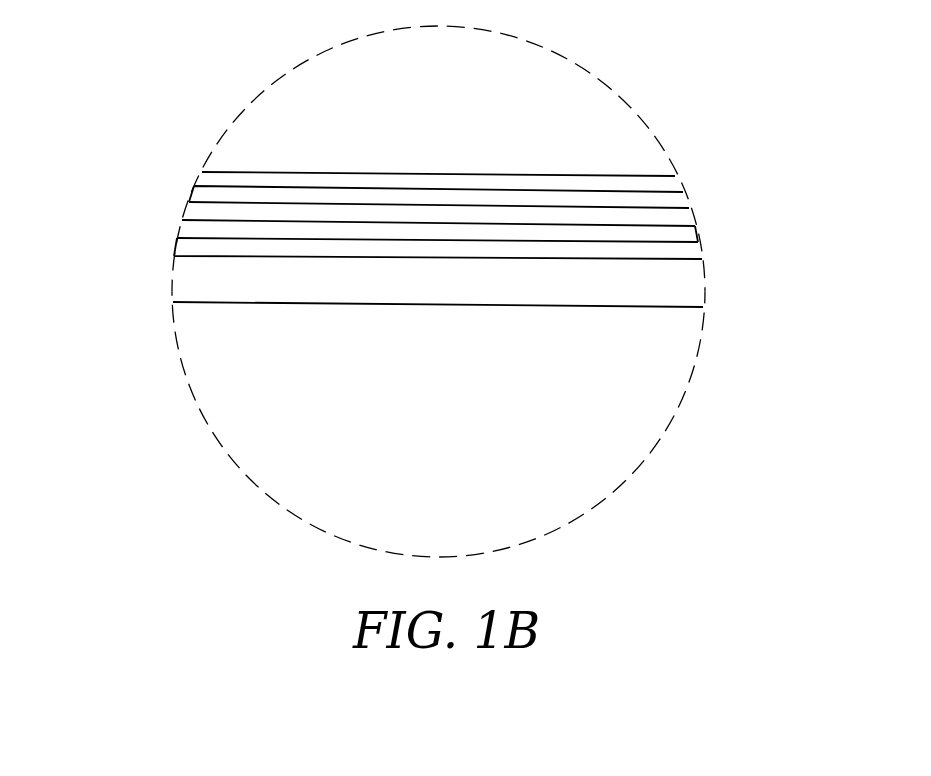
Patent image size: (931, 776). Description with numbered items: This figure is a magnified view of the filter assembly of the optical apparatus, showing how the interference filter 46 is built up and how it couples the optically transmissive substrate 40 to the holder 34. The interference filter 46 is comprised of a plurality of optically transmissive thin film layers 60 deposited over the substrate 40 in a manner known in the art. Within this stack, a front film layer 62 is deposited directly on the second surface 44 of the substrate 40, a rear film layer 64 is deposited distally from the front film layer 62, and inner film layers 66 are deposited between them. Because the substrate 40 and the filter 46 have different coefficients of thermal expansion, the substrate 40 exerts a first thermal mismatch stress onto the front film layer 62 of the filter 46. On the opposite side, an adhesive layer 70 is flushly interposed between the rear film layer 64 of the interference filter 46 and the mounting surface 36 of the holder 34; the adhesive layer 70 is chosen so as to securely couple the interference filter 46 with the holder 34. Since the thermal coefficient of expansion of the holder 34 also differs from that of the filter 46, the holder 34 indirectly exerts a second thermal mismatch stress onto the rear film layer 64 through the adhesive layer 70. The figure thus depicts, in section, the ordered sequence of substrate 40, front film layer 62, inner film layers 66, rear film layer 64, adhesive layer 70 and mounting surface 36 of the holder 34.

The holder 34 is at (657, 412).
The mounting surface 36 is at (682, 305).
The optically transmissive substrate 40 is at (585, 93).
The second surface 44 is at (232, 170).
The interference filter 46 is at (158, 176).
The thin film layers 60 is at (733, 219).
The front film layer 62 is at (663, 183).
The rear film layer 64 is at (690, 250).
The inner film layers 66 is at (210, 212).
The adhesive layer 70 is at (185, 280).